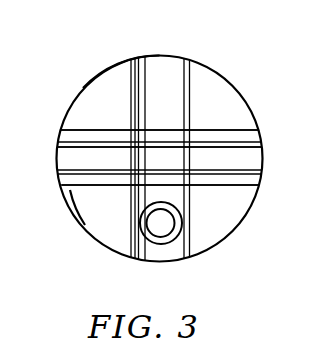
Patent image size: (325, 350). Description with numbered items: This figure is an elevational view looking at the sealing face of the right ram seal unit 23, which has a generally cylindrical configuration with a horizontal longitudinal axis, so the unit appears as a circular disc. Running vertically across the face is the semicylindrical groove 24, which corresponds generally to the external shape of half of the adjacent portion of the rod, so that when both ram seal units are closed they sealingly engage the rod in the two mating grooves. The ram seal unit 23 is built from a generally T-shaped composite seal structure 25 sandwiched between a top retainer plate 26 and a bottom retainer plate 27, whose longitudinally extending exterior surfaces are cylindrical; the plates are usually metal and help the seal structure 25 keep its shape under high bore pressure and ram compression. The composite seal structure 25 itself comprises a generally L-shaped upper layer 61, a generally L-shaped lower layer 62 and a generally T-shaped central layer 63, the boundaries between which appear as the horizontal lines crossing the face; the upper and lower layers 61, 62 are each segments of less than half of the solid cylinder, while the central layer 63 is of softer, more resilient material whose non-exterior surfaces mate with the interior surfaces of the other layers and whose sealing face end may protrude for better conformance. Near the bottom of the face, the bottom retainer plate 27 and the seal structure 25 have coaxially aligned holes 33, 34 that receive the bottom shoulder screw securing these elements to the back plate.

The right ram seal unit 23 is at (240, 73).
The semicylindrical groove 24 is at (185, 80).
The composite seal structure 25 is at (265, 158).
The top retainer plate 26 is at (84, 88).
The bottom retainer plate 27 is at (85, 226).
The hole 33 is at (182, 232).
The hole 34 is at (160, 228).
The upper layer 61 is at (262, 133).
The lower layer 62 is at (263, 178).
The central layer 63 is at (60, 152).